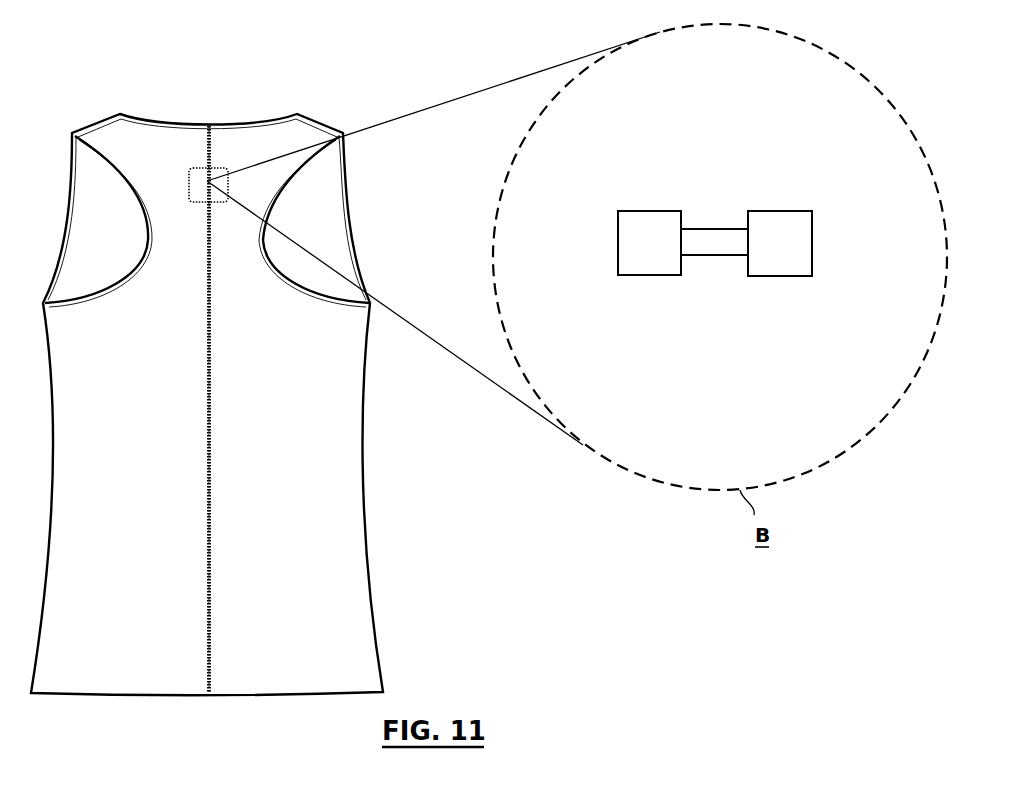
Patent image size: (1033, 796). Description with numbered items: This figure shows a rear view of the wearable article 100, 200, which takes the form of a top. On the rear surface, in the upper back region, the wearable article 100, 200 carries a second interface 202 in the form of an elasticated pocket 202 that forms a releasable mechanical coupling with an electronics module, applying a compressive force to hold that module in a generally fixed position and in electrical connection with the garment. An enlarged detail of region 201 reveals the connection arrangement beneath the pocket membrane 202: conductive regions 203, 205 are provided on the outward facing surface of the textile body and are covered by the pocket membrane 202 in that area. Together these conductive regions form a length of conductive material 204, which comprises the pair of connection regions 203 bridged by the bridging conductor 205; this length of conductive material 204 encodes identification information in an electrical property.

The wearable article 100 is at (265, 404).
The wearable article 200 is at (320, 438).
The sensor module 201 is at (765, 380).
The second interface 202 is at (189, 186).
The connection regions 203 is at (617, 274).
The length of conductive material 204 is at (735, 280).
The bridging conductor 205 is at (718, 257).